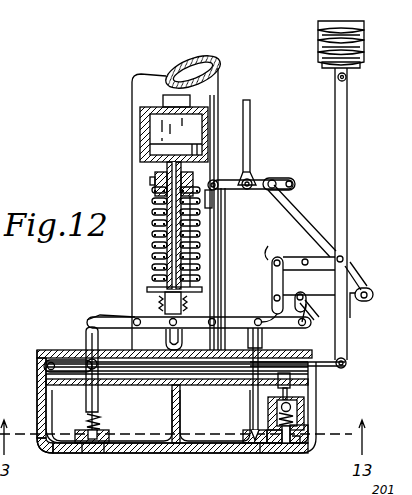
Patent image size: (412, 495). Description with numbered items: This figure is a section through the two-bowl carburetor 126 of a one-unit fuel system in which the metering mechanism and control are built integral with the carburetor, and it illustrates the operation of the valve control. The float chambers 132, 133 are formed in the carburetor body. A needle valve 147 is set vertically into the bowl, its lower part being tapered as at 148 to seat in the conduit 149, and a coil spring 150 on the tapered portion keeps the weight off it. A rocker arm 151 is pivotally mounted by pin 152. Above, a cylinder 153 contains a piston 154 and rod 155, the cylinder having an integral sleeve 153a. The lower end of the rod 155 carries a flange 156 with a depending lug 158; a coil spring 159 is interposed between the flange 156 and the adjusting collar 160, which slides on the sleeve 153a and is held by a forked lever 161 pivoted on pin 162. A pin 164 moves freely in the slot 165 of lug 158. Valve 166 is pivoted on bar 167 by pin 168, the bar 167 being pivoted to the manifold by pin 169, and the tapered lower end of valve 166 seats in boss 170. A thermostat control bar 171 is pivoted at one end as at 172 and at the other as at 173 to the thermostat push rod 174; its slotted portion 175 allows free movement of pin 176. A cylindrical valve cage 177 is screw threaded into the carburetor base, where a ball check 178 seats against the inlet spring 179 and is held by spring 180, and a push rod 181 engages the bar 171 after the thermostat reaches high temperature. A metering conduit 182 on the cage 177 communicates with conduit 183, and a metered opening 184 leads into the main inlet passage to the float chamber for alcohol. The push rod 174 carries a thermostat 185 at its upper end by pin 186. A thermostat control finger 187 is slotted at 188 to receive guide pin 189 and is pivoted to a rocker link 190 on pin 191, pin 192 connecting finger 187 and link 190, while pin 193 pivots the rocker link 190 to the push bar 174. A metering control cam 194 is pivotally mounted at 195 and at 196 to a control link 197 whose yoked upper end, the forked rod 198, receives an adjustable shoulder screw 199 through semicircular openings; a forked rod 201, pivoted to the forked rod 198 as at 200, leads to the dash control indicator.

The two-bowl carburetor 126 is at (160, 455).
The float chamber 132 is at (112, 414).
The float chamber 133 is at (215, 414).
The needle valve 147 is at (88, 334).
The tapered portion 148 is at (102, 428).
The conduit 149 is at (84, 455).
The coil spring 150 is at (86, 420).
The rocker arm 151 is at (106, 317).
The pin 152 is at (134, 317).
The cylinder 153 is at (150, 118).
The sleeve 153a is at (150, 196).
The piston 154 is at (158, 147).
The rod 155 is at (167, 167).
The flange 156 is at (163, 294).
The lug 158 is at (226, 292).
The coil spring 159 is at (196, 234).
The adjusting collar 160 is at (155, 182).
The lever 161 is at (214, 205).
The pin 162 is at (218, 188).
The pin 164 is at (165, 305).
The slot 165 is at (168, 342).
The valve 166 is at (253, 409).
The bar 167 is at (248, 344).
The pin 168 is at (284, 314).
The pin 169 is at (236, 316).
The boss 170 is at (246, 447).
The thermostat control bar 171 is at (160, 373).
The pivot 172 is at (44, 366).
The pivot 173 is at (346, 366).
The thermostat push rod 174 is at (347, 346).
The slotted portion 175 is at (112, 372).
The pin 176 is at (86, 358).
The cylindrical valve cage 177 is at (297, 414).
The ball check 178 is at (290, 405).
The inlet spring 179 is at (288, 392).
The spring 180 is at (290, 432).
The push rod 181 is at (290, 378).
The metering conduit 182 is at (300, 446).
The conduit 183 is at (286, 448).
The metered opening 184 is at (260, 456).
The thermostat 185 is at (330, 31).
The pin 186 is at (346, 80).
The thermostat control finger 187 is at (272, 262).
The slot 188 is at (297, 297).
The guide pin 189 is at (300, 294).
The rocker link 190 is at (268, 248).
The pin 191 is at (305, 258).
The pin 192 is at (276, 252).
The pin 193 is at (344, 258).
The metering control cam 194 is at (363, 305).
The pivot 195 is at (318, 302).
The pivot 196 is at (368, 290).
The control link 197 is at (311, 216).
The forked rod 198 is at (273, 179).
The shoulder screw 199 is at (290, 181).
The pivot 200 is at (252, 178).
The forked rod 201 is at (252, 142).